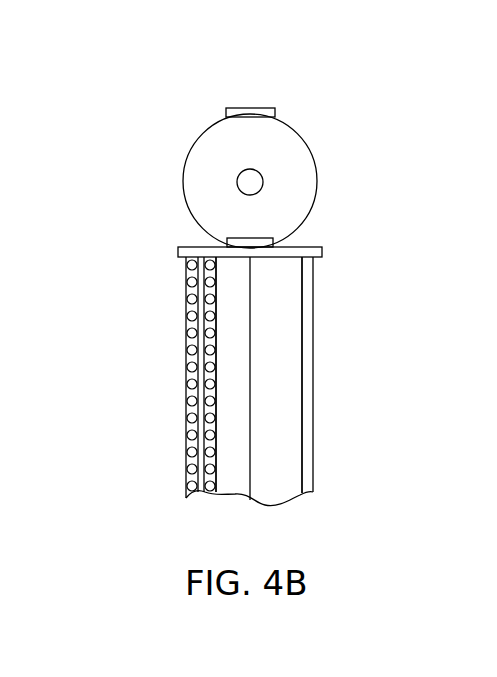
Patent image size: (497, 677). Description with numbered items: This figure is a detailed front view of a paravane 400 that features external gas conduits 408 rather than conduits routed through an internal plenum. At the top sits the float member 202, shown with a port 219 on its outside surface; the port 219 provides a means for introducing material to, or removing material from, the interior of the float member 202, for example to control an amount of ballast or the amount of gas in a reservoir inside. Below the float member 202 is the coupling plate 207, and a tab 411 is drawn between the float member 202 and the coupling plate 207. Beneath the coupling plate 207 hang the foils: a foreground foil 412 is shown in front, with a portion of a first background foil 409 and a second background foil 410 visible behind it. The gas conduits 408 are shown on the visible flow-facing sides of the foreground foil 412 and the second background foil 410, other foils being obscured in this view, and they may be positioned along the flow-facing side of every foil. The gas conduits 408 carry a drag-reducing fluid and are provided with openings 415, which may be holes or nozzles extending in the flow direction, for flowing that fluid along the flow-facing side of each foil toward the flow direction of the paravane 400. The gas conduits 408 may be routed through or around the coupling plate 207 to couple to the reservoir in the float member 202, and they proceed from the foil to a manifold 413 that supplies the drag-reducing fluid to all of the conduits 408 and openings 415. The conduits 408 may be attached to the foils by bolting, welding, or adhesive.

The paravane 400 is at (302, 105).
The float member 202 is at (196, 140).
The port 219 is at (244, 108).
The bottom tab 411 is at (227, 246).
The coupling plate 207 is at (316, 247).
The gas conduits 408 is at (187, 272).
The first background foil 409 is at (313, 330).
The second background foil 410 is at (187, 373).
The foreground foil 412 is at (302, 440).
The manifold 413 is at (205, 497).
The openings 415 is at (216, 468).